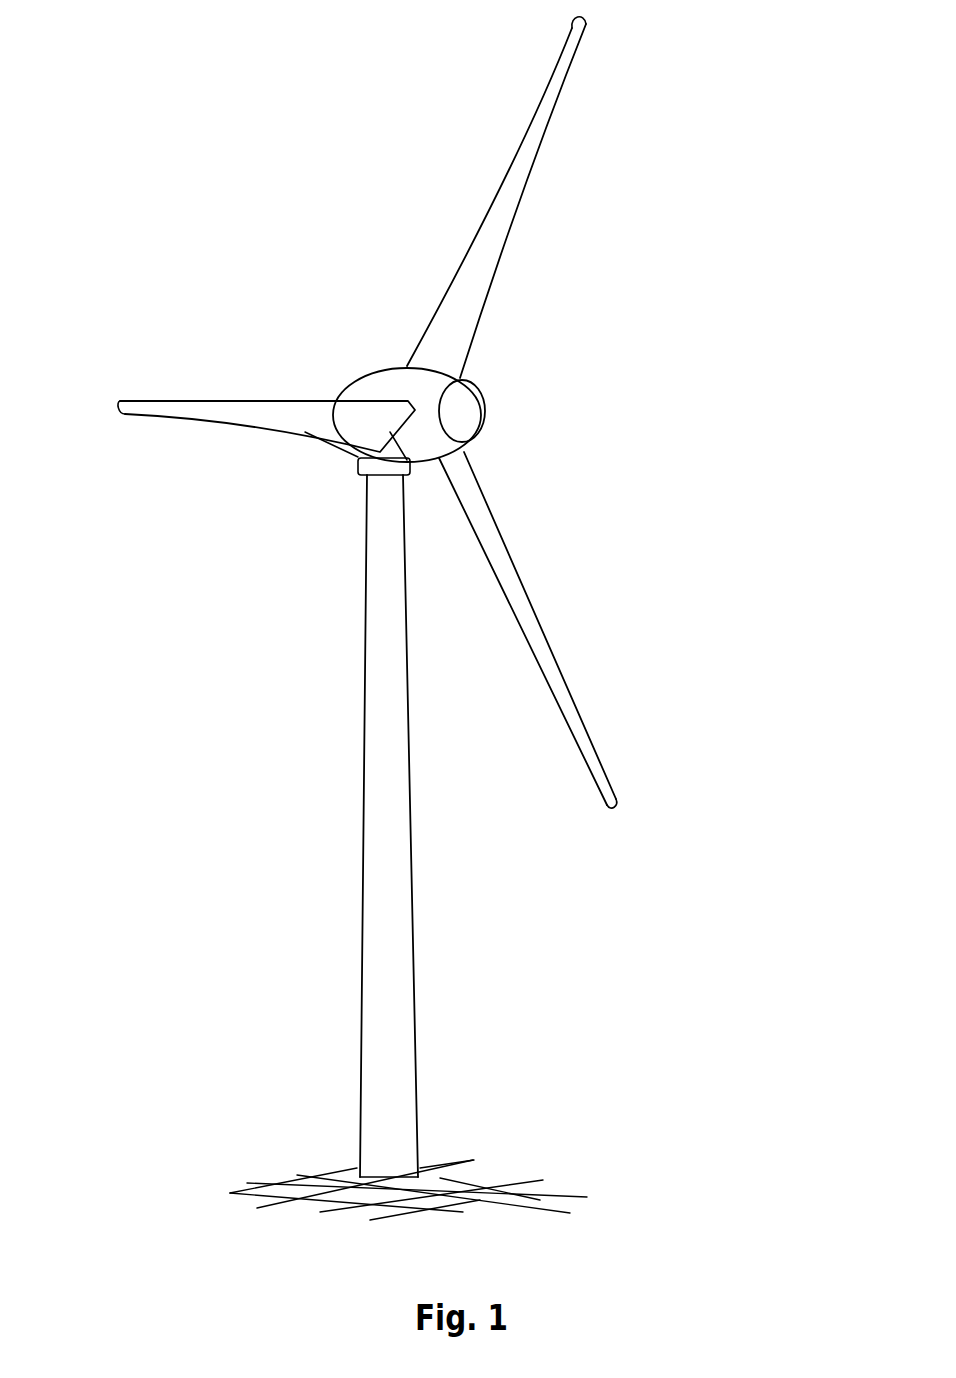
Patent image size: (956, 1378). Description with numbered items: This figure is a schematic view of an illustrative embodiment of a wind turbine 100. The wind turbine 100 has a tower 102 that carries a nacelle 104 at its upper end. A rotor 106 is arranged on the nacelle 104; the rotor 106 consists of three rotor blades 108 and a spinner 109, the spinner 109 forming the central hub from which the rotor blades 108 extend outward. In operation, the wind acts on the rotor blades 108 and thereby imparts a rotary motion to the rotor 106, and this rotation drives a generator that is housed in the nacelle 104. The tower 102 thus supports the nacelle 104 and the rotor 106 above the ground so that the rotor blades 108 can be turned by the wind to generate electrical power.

The wind turbine 100 is at (318, 535).
The tower 102 is at (395, 933).
The nacelle 104 is at (378, 382).
The rotor 106 is at (617, 292).
The rotor blades 108 is at (527, 153).
The spinner 109 is at (470, 408).